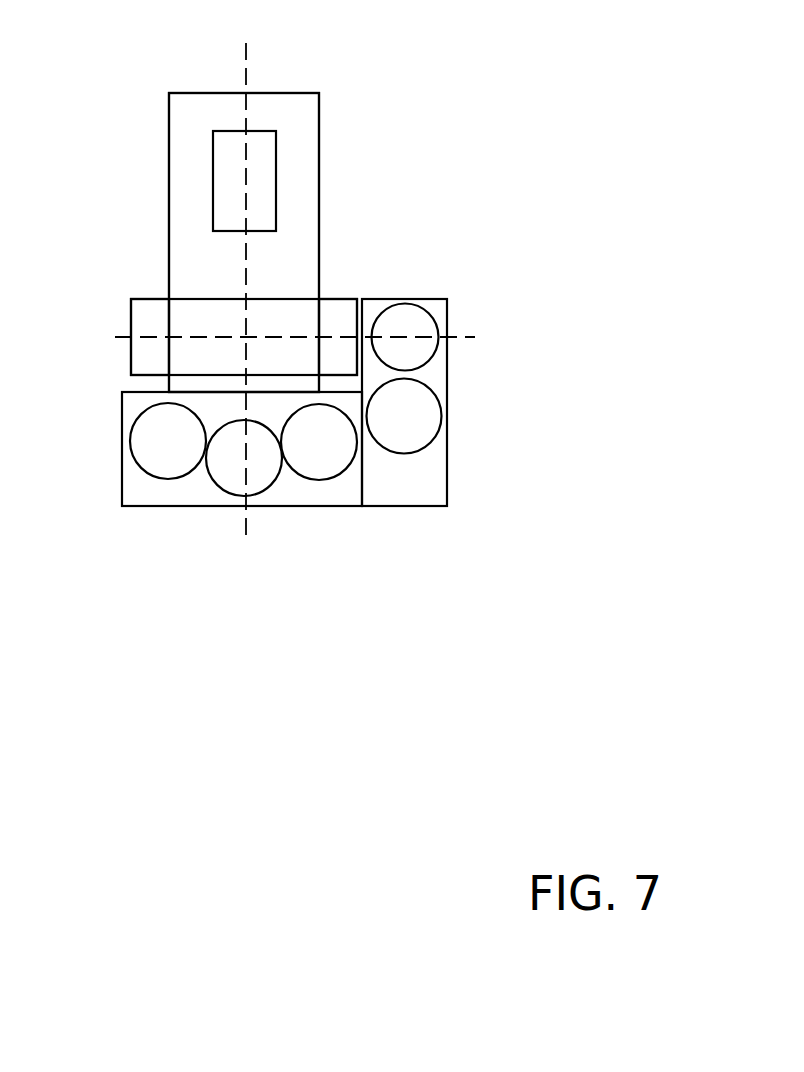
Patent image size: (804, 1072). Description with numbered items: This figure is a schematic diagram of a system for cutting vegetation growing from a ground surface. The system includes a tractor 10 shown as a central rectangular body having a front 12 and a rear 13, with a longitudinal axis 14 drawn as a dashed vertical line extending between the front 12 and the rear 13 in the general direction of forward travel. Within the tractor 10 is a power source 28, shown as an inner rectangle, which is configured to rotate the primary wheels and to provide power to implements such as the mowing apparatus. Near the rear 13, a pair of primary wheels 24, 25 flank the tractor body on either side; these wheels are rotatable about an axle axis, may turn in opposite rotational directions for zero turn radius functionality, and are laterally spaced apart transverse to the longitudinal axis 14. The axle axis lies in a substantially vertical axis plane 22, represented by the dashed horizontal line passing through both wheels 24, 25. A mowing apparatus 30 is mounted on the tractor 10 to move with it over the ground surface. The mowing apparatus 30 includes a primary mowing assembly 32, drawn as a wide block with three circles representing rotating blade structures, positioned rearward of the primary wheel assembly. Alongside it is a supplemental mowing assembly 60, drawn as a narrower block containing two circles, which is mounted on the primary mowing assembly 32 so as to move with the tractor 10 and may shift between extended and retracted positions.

The tractor 10 is at (320, 103).
The front 12 is at (306, 78).
The rear 13 is at (126, 374).
The longitudinal axis 14 is at (246, 64).
The vertical axis plane 22 is at (470, 336).
The primary wheel 24 is at (130, 318).
The primary wheel 25 is at (338, 298).
The power source 28 is at (277, 139).
The mowing apparatus 30 is at (314, 596).
The primary mowing assembly 32 is at (276, 527).
The supplemental mowing assembly 60 is at (417, 527).